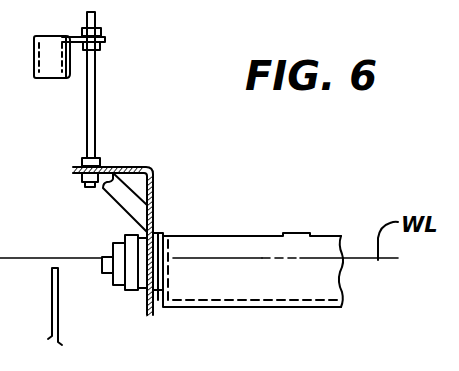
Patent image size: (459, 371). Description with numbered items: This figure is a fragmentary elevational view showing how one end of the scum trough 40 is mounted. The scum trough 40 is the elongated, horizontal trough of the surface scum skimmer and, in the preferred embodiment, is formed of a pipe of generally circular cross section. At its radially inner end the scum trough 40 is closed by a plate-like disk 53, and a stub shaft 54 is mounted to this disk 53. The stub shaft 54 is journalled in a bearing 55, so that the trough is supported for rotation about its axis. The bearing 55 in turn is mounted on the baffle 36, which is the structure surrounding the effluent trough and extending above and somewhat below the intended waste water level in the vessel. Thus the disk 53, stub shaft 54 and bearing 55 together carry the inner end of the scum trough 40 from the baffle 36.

The baffle 36 is at (157, 185).
The stub shaft 54 is at (160, 265).
The bearing 55 is at (120, 273).
The plate-like disk 53 is at (155, 297).
The scum trough 40 is at (255, 298).